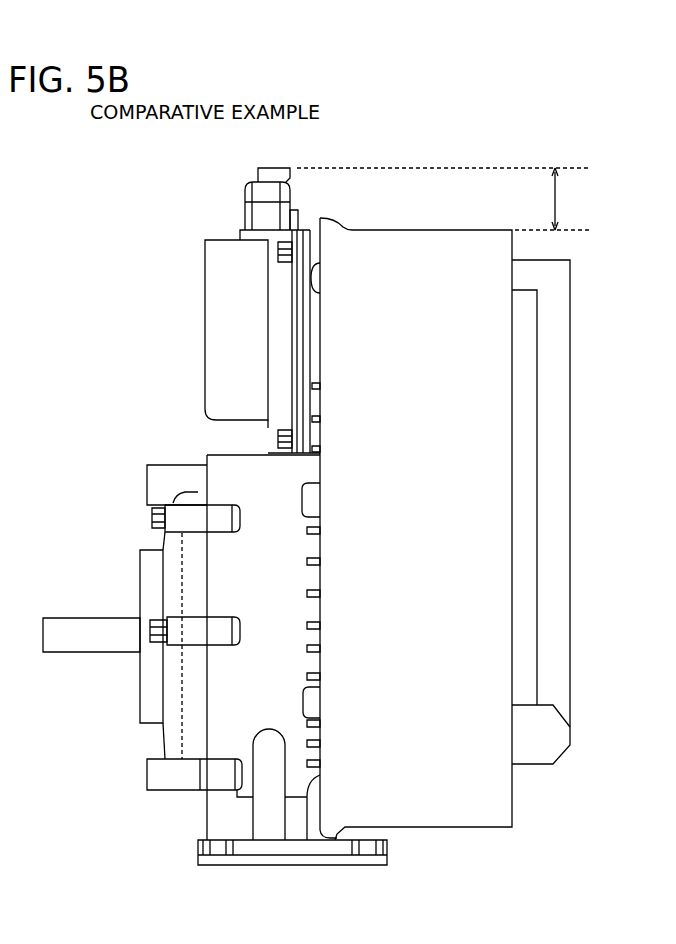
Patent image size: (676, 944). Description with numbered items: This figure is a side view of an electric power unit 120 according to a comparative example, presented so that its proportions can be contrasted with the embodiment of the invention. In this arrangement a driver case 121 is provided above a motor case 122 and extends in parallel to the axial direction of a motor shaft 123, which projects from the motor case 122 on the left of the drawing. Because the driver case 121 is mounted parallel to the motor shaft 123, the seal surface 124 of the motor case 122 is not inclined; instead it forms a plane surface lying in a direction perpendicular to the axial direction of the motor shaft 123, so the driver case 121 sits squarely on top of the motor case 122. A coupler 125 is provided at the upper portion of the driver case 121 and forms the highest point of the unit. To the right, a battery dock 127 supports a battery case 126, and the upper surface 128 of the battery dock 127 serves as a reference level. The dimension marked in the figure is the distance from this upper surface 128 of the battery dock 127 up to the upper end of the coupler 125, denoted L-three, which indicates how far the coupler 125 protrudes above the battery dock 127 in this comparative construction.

The electric power unit 120 is at (156, 206).
The driver case 121 is at (215, 299).
The motor case 122 is at (228, 692).
The motor shaft 123 is at (95, 637).
The seal surface 124 is at (303, 378).
The coupler 125 is at (260, 194).
The battery case 126 is at (570, 437).
The battery dock 127 is at (478, 358).
The upper surface 128 is at (475, 230).